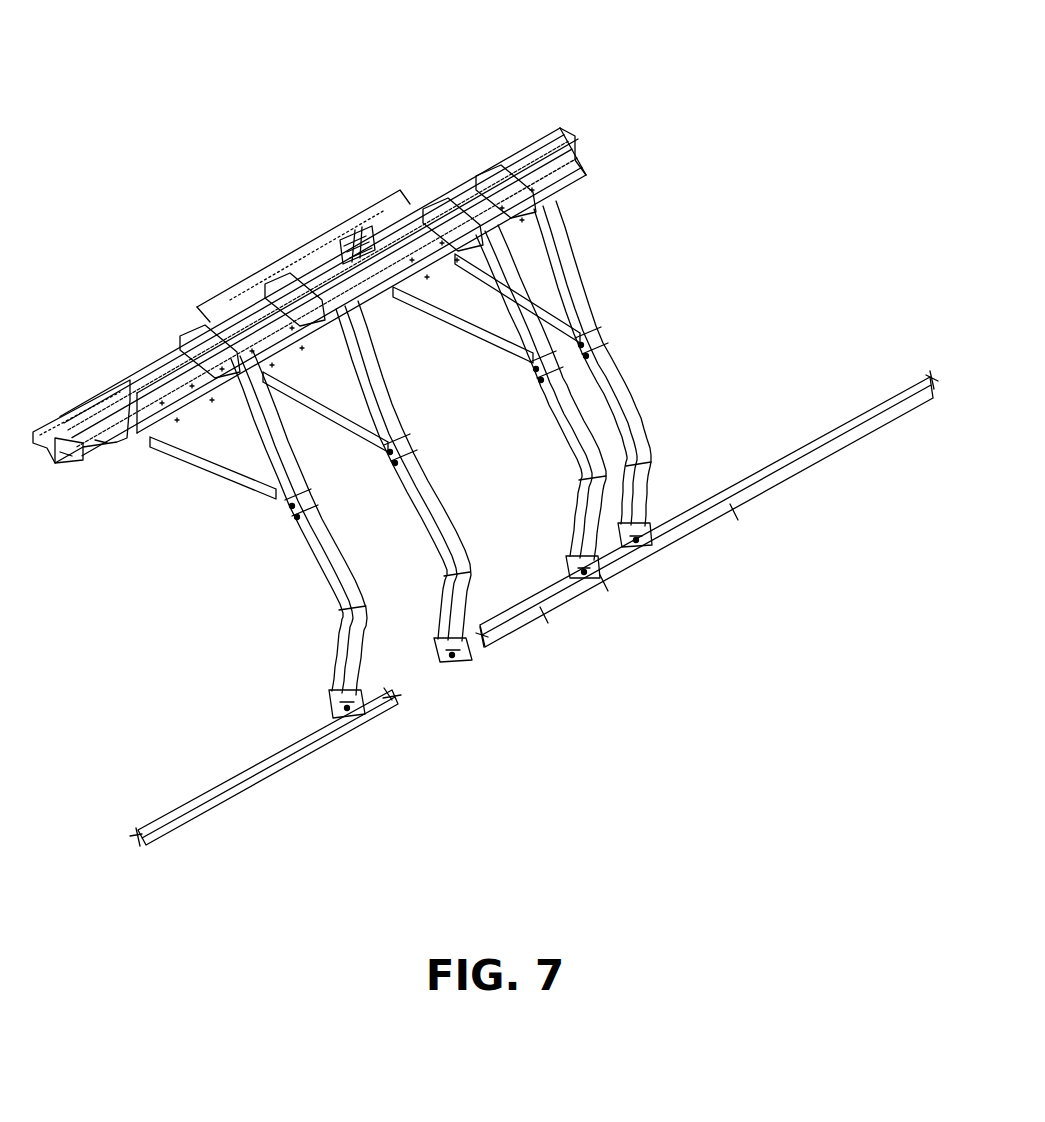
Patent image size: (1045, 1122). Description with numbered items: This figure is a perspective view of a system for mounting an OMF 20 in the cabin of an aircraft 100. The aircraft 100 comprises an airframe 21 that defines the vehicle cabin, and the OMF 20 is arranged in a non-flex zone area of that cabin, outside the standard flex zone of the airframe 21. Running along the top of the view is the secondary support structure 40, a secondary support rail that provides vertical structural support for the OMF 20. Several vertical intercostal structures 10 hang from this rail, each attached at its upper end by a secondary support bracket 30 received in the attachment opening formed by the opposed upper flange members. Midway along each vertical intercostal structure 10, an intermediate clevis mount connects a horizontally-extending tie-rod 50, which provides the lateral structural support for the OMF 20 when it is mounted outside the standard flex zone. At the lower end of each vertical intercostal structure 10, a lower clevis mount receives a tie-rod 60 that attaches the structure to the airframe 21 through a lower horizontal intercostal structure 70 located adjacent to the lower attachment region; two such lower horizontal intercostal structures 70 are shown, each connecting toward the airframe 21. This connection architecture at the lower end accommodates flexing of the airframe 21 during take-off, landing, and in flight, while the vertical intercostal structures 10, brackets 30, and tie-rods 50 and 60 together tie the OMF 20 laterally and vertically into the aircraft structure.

The aircraft 100 is at (108, 112).
The vertical intercostal structure 10 is at (337, 583).
The OMF 20 is at (58, 420).
The airframe 21 is at (612, 647).
The secondary support bracket 30 is at (192, 350).
The secondary support structure 40 is at (522, 155).
The horizontally-extending tie-rod 50 is at (210, 462).
The tie-rod 60 is at (458, 648).
The lower horizontal intercostal structure 70 is at (294, 752).